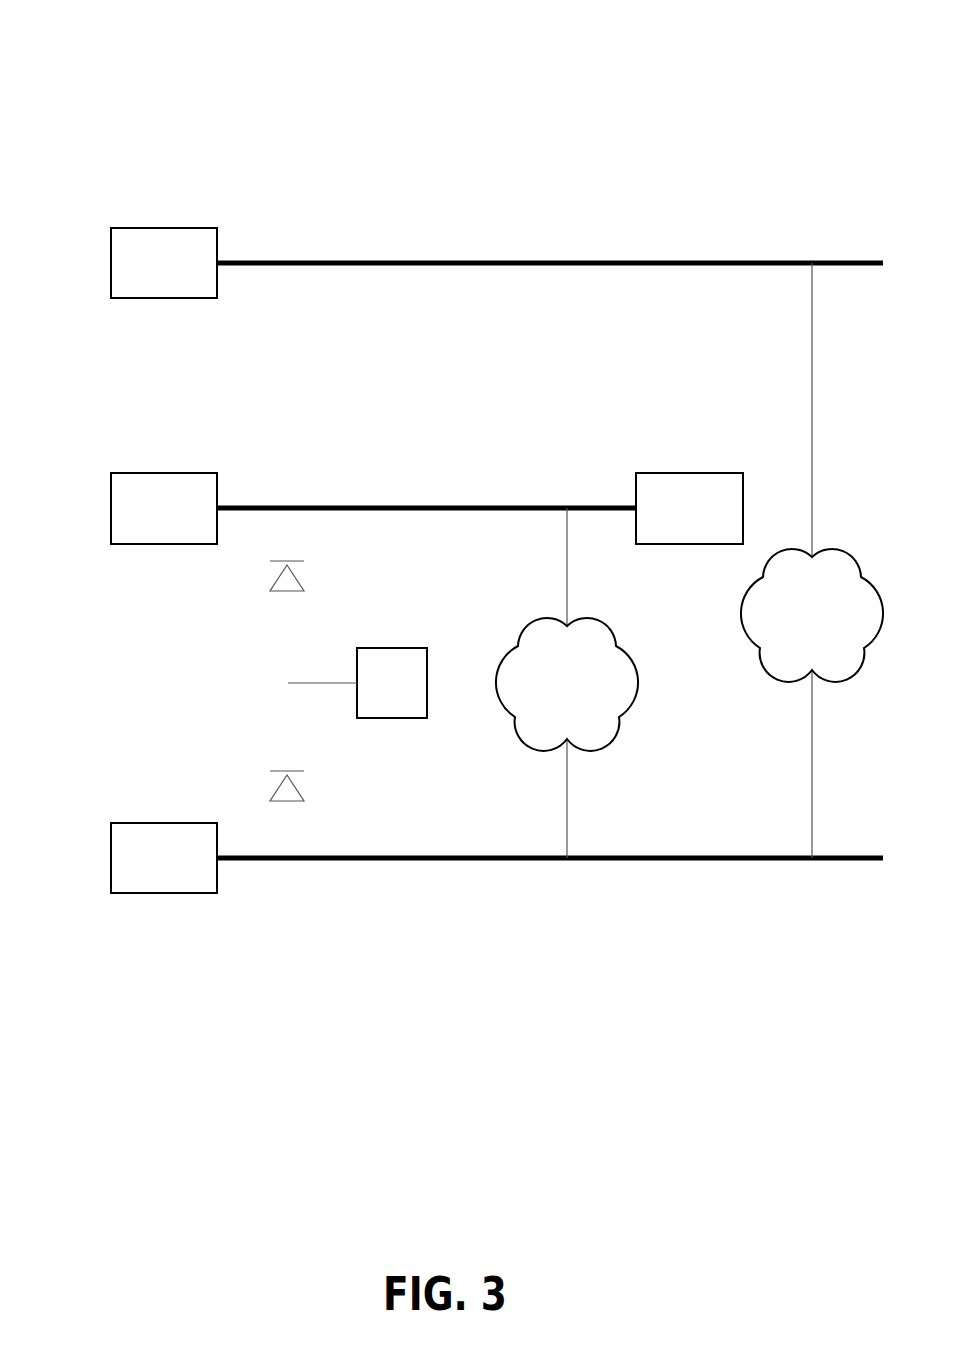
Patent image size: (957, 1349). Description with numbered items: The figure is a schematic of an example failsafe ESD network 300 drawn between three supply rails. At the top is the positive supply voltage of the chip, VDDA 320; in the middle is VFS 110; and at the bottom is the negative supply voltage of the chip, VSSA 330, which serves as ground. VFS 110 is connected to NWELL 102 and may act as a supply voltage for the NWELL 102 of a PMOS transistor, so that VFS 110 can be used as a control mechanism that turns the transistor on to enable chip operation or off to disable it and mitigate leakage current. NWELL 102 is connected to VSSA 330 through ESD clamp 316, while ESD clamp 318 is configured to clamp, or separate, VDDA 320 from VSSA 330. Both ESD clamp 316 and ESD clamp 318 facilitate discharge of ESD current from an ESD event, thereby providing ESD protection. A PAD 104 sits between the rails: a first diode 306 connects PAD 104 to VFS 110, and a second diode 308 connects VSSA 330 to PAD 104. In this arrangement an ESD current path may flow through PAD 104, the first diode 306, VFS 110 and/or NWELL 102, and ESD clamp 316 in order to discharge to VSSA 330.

The failsafe ESD network 300 is at (134, 40).
The VDDA 320 is at (163, 228).
The VFS 110 is at (163, 473).
The VSSA 330 is at (163, 823).
The NWELL 102 is at (690, 473).
The PAD 104 is at (392, 648).
The first diode 306 is at (287, 596).
The second diode 308 is at (286, 770).
The ESD clamp 316 is at (588, 755).
The ESD clamp 318 is at (790, 685).